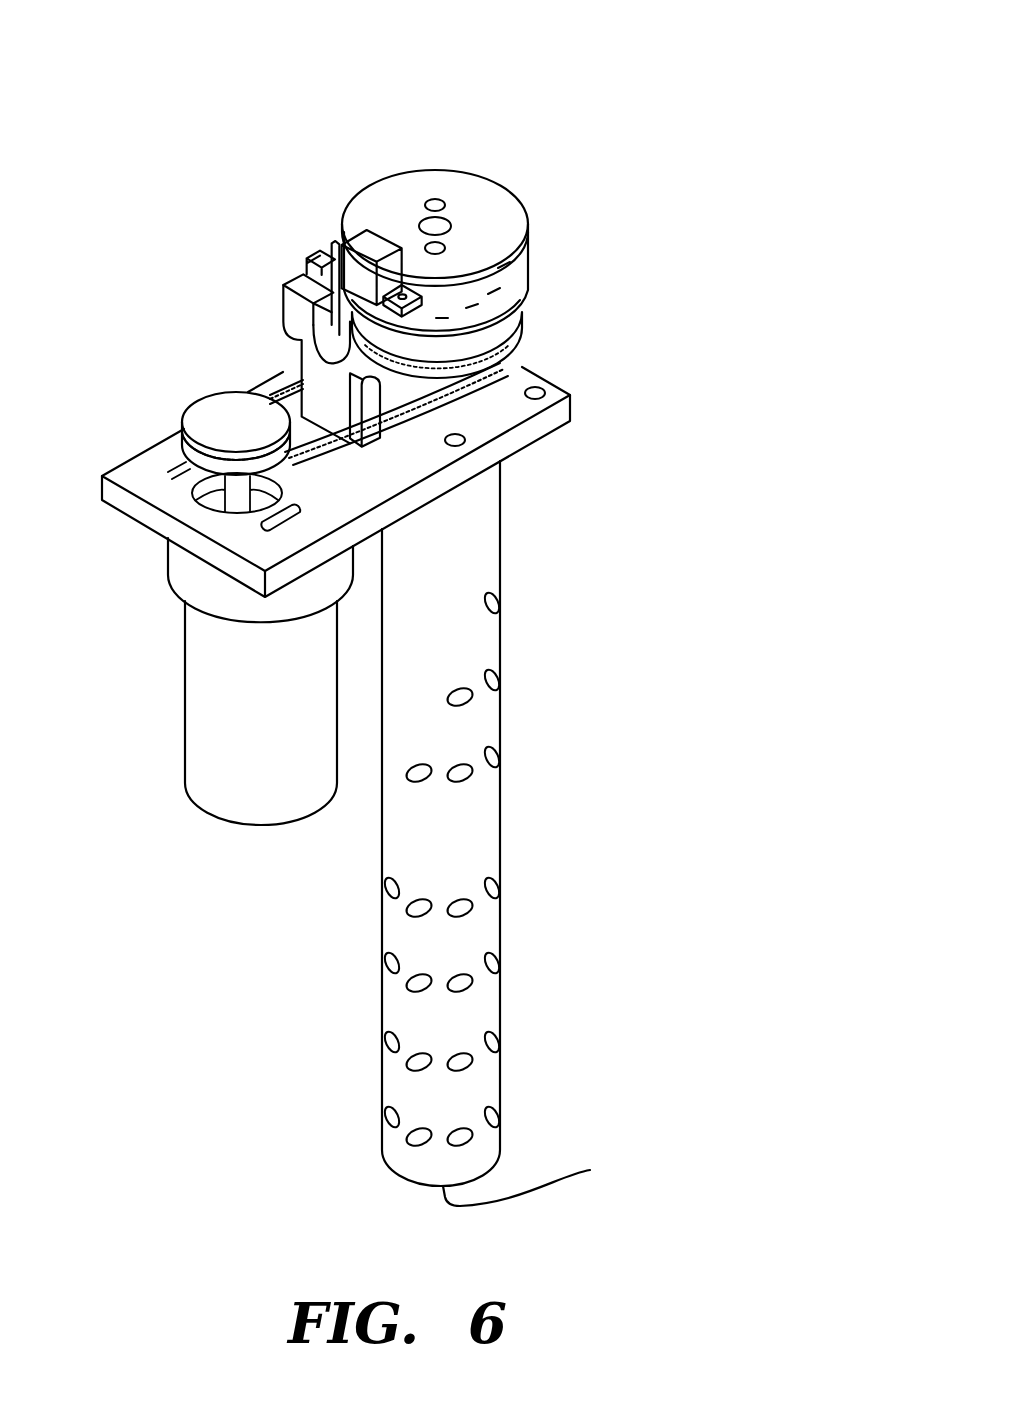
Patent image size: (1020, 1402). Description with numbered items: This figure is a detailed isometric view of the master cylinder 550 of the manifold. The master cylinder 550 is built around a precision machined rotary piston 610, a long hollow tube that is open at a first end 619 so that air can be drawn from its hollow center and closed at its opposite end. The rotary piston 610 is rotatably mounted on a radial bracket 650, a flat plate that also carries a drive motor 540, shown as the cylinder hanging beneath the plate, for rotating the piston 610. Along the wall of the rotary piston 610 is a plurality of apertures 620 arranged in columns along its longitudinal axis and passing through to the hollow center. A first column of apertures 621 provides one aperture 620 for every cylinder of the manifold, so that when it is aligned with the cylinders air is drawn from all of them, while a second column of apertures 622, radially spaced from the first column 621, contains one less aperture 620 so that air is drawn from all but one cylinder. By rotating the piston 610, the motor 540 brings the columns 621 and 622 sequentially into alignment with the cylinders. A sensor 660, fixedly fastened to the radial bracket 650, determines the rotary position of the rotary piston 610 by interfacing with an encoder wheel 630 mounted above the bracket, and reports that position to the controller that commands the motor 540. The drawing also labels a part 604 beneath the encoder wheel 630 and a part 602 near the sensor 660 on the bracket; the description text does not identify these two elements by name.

The master cylinder 550 is at (543, 90).
The encoder wheel 630 is at (539, 168).
The lower gear flange 604 is at (523, 343).
The knob cap 602 is at (203, 420).
The sensor 660 is at (308, 262).
The radial bracket 650 is at (533, 427).
The rotary piston 610 is at (505, 556).
The first column of apertures 621 is at (500, 605).
The second column of apertures 622 is at (500, 756).
The apertures 620 is at (500, 963).
The first end 619 is at (590, 1170).
The drive motor 540 is at (160, 706).